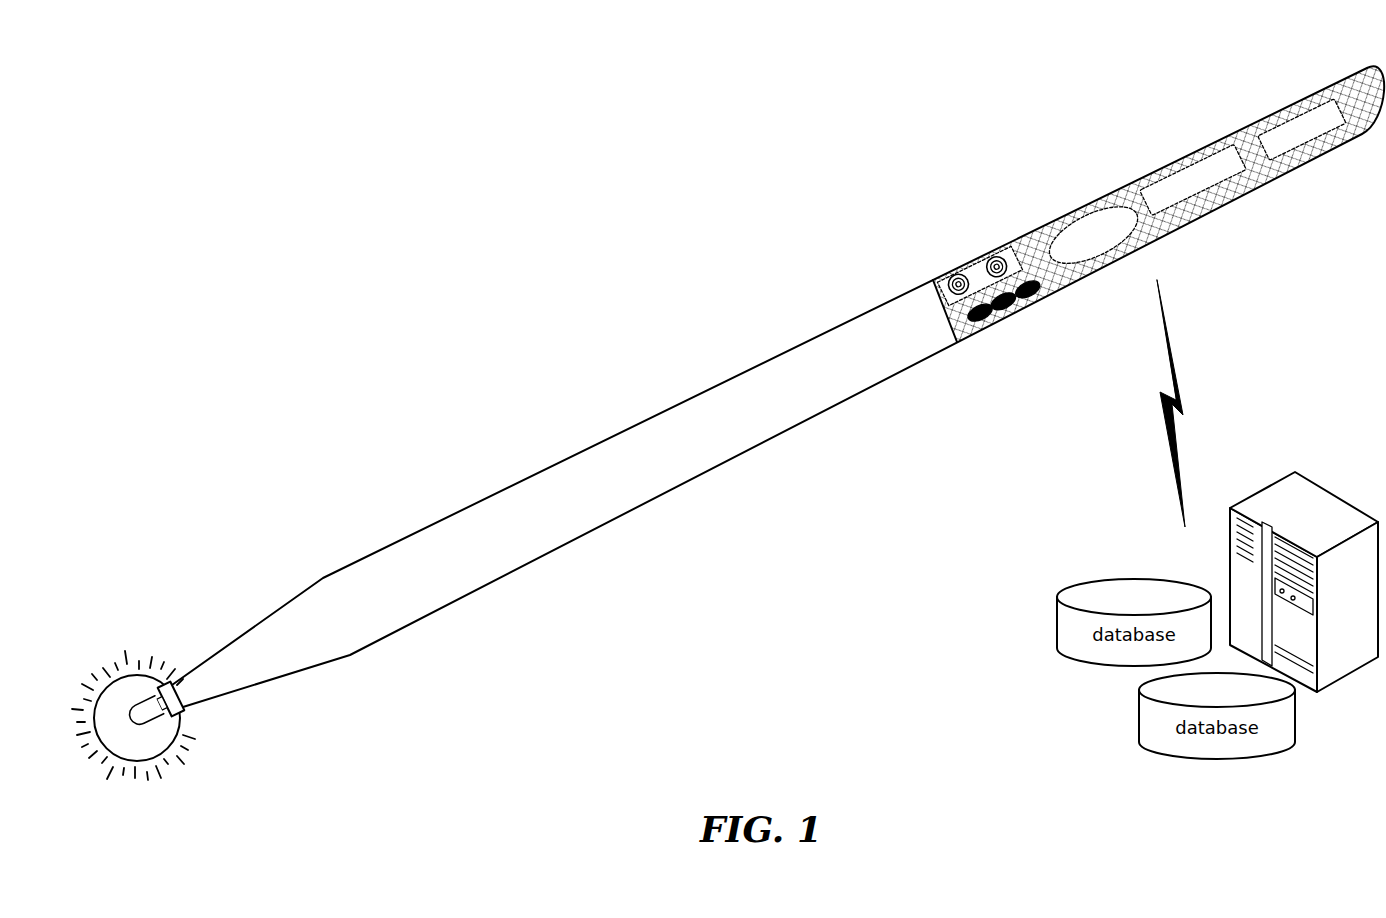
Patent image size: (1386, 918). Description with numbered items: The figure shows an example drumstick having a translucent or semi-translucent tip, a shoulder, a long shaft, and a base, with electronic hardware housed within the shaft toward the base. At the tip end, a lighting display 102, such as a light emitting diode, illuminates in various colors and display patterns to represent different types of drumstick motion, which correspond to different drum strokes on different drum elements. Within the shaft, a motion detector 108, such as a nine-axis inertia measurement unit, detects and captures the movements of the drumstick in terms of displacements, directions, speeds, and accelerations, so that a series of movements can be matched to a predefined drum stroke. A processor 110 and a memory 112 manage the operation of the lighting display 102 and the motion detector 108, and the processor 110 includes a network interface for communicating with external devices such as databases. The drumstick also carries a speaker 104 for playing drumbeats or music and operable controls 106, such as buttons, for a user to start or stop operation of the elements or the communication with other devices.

The lighting display 102 is at (138, 712).
The speaker 104 is at (975, 273).
The operable controls 106 is at (1029, 298).
The motion detector 108 is at (1096, 211).
The processor 110 is at (1184, 177).
The memory 112 is at (1300, 122).